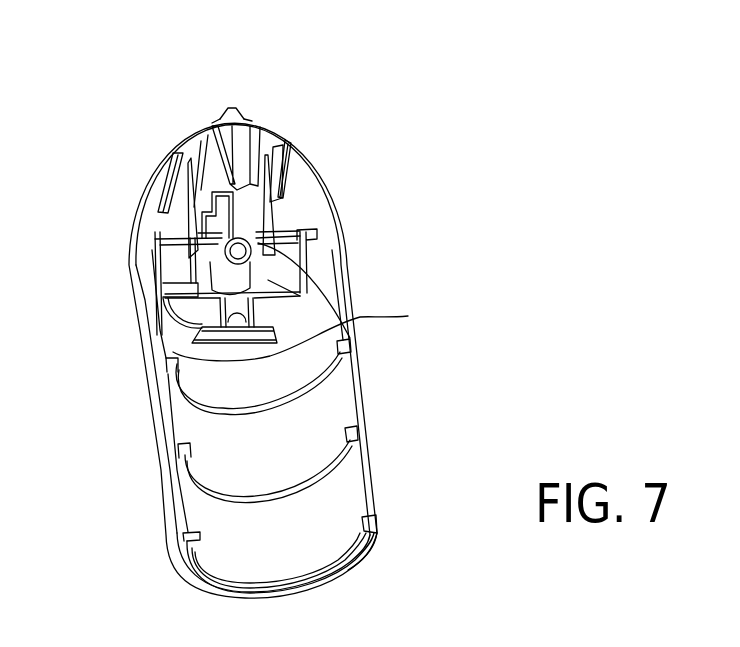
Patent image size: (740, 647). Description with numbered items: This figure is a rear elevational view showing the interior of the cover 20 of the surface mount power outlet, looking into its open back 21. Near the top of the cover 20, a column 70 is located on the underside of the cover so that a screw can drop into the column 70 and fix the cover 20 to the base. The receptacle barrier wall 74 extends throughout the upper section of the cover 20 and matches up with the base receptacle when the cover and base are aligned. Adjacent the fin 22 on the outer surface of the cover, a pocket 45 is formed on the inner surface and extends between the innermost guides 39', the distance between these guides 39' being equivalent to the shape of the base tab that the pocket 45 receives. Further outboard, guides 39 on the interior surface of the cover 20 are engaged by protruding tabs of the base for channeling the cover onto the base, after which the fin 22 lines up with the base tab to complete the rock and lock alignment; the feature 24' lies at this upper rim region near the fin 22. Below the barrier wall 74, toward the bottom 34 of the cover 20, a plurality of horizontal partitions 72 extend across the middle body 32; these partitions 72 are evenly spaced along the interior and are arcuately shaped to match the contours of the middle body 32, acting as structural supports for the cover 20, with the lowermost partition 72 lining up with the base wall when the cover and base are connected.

The cover 20 is at (141, 362).
The open back 21 is at (282, 220).
The fin 22 is at (231, 107).
The rim notch 24' is at (194, 62).
The middle body 32 is at (277, 466).
The bottom 34 is at (360, 566).
The guides 39 is at (232, 145).
The innermost guides 39' is at (236, 150).
The pocket 45 is at (233, 138).
The column 70 is at (252, 251).
The horizontal partitions 72 is at (338, 368).
The receptacle barrier wall 74 is at (190, 218).